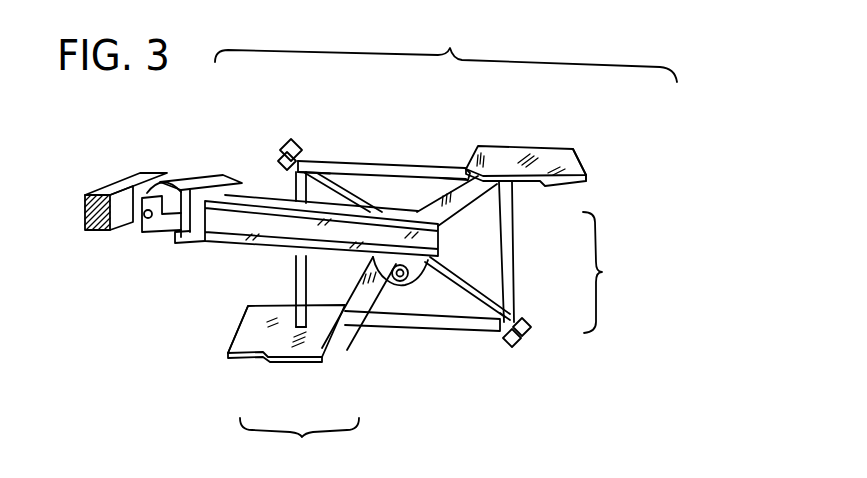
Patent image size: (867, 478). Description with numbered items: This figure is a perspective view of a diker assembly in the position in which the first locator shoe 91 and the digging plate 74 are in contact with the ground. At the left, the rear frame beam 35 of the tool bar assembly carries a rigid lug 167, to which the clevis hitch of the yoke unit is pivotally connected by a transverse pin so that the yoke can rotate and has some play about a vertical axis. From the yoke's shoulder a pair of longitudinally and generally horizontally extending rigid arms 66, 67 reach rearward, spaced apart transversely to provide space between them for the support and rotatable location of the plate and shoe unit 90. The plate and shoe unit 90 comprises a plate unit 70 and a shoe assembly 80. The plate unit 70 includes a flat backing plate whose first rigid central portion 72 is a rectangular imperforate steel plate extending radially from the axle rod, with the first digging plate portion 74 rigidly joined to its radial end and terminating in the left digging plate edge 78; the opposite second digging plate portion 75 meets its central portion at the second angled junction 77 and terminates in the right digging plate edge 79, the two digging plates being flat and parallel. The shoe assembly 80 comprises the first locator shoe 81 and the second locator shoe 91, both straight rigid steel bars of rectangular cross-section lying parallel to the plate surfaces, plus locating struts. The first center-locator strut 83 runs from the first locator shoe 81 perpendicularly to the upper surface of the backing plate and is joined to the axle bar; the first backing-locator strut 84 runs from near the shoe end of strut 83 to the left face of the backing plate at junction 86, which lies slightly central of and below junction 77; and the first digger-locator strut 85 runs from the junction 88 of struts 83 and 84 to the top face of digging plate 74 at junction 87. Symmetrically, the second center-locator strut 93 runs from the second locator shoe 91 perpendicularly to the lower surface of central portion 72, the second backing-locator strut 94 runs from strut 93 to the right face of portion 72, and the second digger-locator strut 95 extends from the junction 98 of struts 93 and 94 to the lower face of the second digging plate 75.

The rear frame beam 35 is at (102, 188).
The lug 167 is at (143, 197).
The arm 66 is at (195, 243).
The arm 67 is at (255, 195).
The first digger-locator strut 85 is at (296, 266).
The first locator shoe 81 is at (286, 151).
The junction 88 is at (307, 155).
The first backing-locator strut 84 is at (390, 170).
The first backing-locator strut junction 86 is at (467, 167).
The first center-locator strut 83 is at (346, 195).
The second digging plate portion 75 is at (533, 153).
The second angled junction 77 is at (483, 160).
The right digging plate edge 79 is at (587, 167).
The second digger-locator strut 95 is at (504, 237).
The second backing-locator strut 94 is at (460, 325).
The second center-locator strut 93 is at (443, 283).
The junction 98 is at (507, 317).
The second locator shoe 91 is at (527, 327).
The first rigid central portion 72 is at (350, 337).
The first digging plate portion 74 is at (293, 355).
The first digger-locator strut junction 87 is at (293, 323).
The left digging plate edge 78 is at (232, 340).
The plate unit 70 is at (299, 441).
The shoe assembly 80 is at (621, 272).
The plate and shoe unit 90 is at (446, 44).